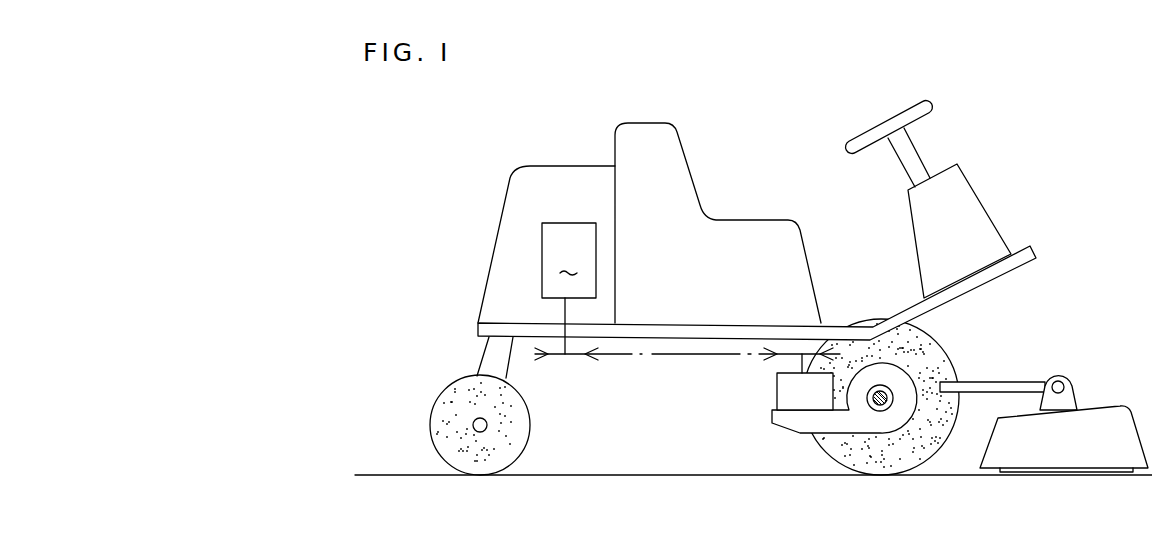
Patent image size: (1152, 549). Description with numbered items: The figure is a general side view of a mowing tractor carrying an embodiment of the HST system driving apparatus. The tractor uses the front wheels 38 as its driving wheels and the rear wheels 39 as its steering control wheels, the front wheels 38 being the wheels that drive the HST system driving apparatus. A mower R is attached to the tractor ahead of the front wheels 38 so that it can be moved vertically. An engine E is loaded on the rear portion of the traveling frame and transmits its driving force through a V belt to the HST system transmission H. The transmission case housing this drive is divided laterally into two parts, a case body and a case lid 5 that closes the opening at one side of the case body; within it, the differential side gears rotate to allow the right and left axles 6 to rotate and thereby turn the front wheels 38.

The front wheels 38 is at (940, 363).
The rear wheels 39 is at (522, 436).
The case lid 5 is at (887, 418).
The axles 6 is at (891, 401).
The HST system transmission H is at (777, 392).
The engine E is at (569, 260).
The mower R is at (1136, 365).